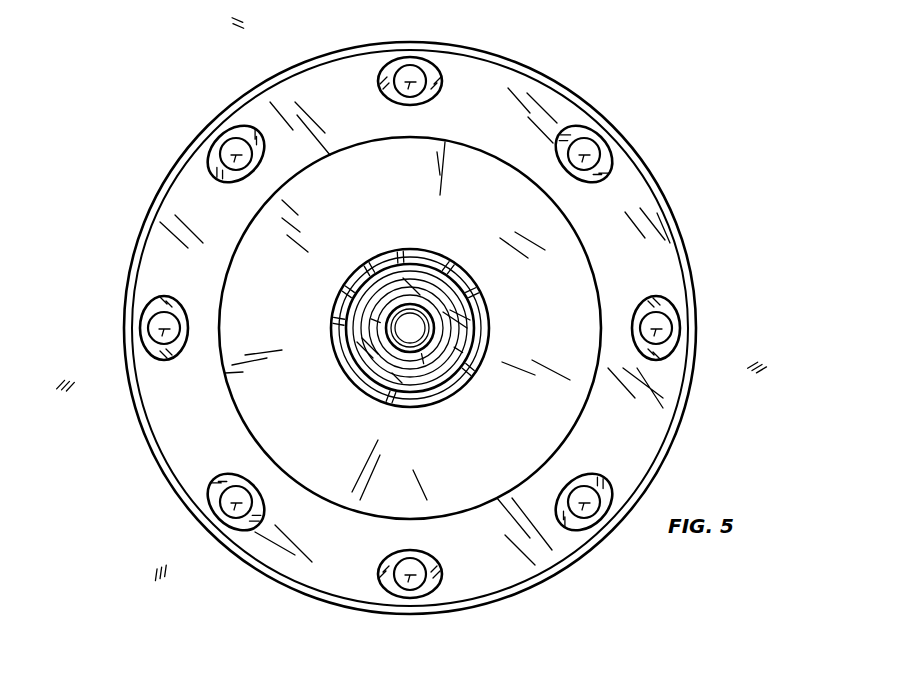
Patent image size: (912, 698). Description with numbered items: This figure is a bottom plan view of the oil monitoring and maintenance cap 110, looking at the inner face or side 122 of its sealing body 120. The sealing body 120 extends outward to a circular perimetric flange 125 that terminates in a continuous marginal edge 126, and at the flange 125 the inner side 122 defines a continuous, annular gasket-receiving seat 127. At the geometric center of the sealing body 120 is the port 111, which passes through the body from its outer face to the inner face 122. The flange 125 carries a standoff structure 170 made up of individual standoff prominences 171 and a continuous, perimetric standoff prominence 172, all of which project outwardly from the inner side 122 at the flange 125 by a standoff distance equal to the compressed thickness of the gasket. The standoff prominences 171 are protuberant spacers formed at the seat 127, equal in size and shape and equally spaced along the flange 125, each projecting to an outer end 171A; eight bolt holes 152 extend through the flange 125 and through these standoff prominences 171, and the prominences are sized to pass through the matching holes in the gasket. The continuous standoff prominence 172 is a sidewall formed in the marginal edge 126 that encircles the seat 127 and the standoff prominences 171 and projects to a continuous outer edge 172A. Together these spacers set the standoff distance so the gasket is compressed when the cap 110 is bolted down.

The cap 110 is at (673, 208).
The port 111 is at (410, 328).
The sealing body 120 is at (590, 396).
The inner face or side 122 is at (510, 362).
The perimetric flange 125 is at (548, 97).
The marginal edge 126 is at (520, 62).
The gasket-receiving seat 127 is at (472, 135).
The bolt holes 152 is at (236, 153).
The standoff structure 170 is at (655, 293).
The standoff prominences 171 is at (382, 68).
The outer end 171A is at (438, 80).
The continuous standoff prominence 172 is at (492, 66).
The continuous outer edge 172A is at (690, 385).